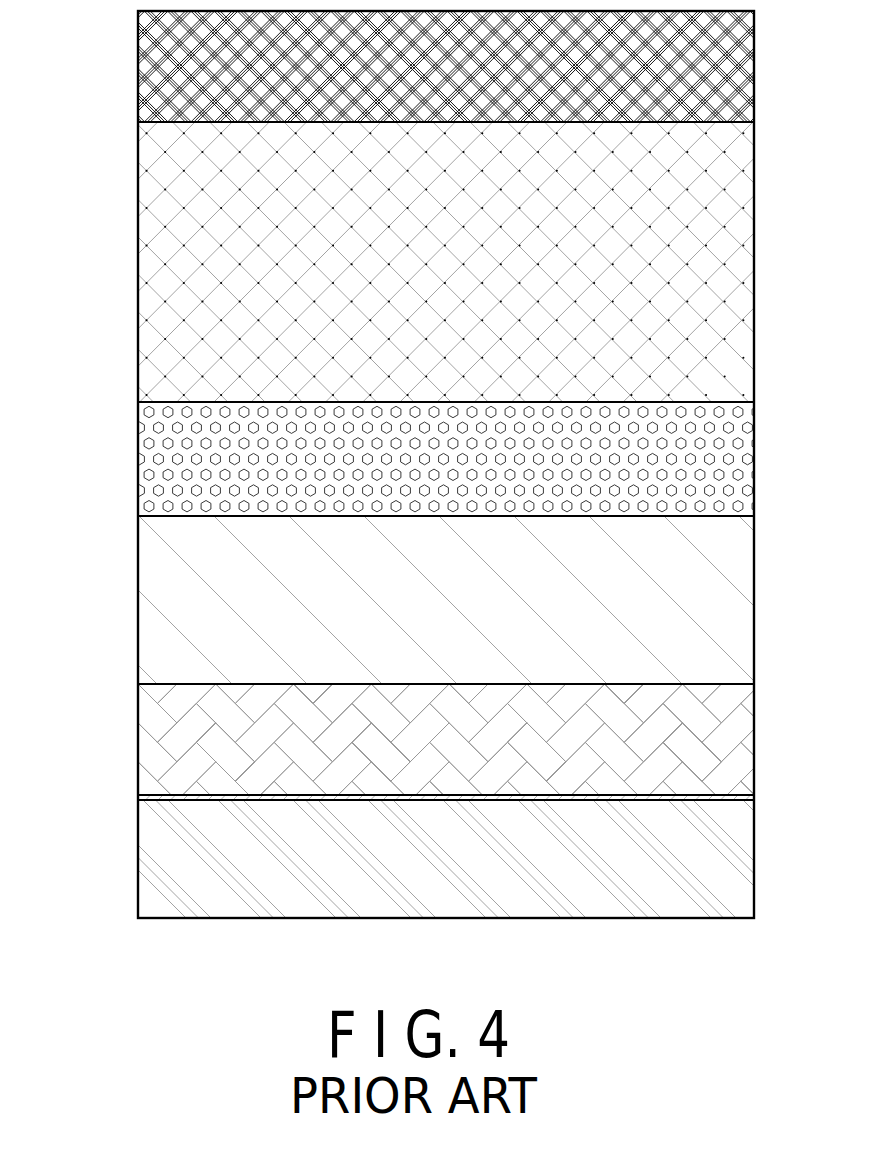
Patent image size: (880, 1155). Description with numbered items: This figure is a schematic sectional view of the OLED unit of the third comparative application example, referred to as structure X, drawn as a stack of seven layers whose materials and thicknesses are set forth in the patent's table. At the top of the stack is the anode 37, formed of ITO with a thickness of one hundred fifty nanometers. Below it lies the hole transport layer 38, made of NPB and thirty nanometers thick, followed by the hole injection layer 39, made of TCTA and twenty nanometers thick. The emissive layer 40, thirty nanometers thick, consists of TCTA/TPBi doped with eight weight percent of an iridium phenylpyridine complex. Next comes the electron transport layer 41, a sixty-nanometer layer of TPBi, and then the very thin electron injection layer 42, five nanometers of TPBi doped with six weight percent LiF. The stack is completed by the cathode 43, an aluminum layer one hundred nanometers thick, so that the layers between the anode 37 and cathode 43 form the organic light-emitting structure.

The anode 37 is at (155, 66).
The hole transport layer 38 is at (148, 250).
The hole injection layer 39 is at (145, 470).
The emissive layer 40 is at (145, 582).
The electron transport layer 41 is at (145, 740).
The electron injection layer 42 is at (145, 798).
The cathode 43 is at (158, 852).